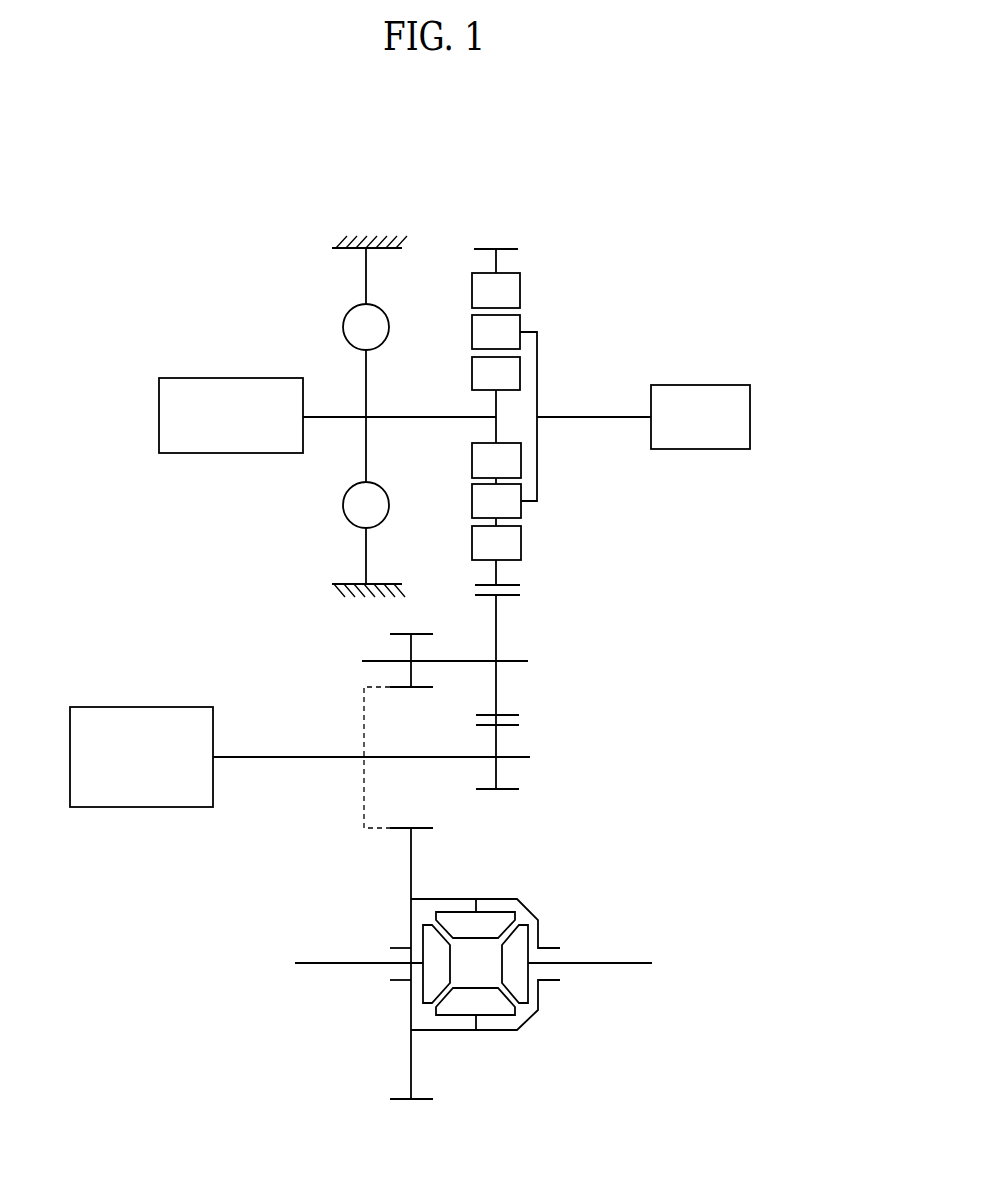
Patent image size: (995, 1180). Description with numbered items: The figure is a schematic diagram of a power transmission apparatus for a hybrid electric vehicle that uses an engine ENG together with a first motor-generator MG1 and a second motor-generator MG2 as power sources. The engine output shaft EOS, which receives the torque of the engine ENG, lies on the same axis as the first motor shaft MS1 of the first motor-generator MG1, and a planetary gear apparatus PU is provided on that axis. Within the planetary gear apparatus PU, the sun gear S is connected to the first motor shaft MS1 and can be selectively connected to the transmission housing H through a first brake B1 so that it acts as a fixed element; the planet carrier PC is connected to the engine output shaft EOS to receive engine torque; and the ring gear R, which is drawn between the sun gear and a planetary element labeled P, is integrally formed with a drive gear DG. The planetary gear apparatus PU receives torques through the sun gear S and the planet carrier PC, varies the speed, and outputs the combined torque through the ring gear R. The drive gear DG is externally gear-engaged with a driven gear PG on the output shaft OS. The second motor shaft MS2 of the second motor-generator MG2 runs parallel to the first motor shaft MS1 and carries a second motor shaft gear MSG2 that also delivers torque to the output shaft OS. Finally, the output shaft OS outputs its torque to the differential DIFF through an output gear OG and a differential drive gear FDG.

The transmission housing H is at (378, 239).
The first brake B1 is at (366, 416).
The first motor-generator MG1 is at (231, 415).
The first motor shaft MS1 is at (333, 420).
The engine ENG is at (700, 417).
The engine output shaft EOS is at (593, 420).
The planetary gear apparatus PU is at (539, 417).
The ring gear R is at (496, 290).
The planet carrier P is at (496, 332).
The sun gear S is at (496, 373).
The planet carrier PC is at (538, 367).
The drive gear DG is at (512, 584).
The driven gear PG is at (499, 632).
The output shaft OS is at (513, 664).
The output gear OG is at (400, 650).
The second motor shaft gear MSG2 is at (500, 740).
The second motor shaft MS2 is at (263, 760).
The second motor-generator MG2 is at (141, 757).
The differential drive gear FDG is at (412, 862).
The differential DIFF is at (547, 899).